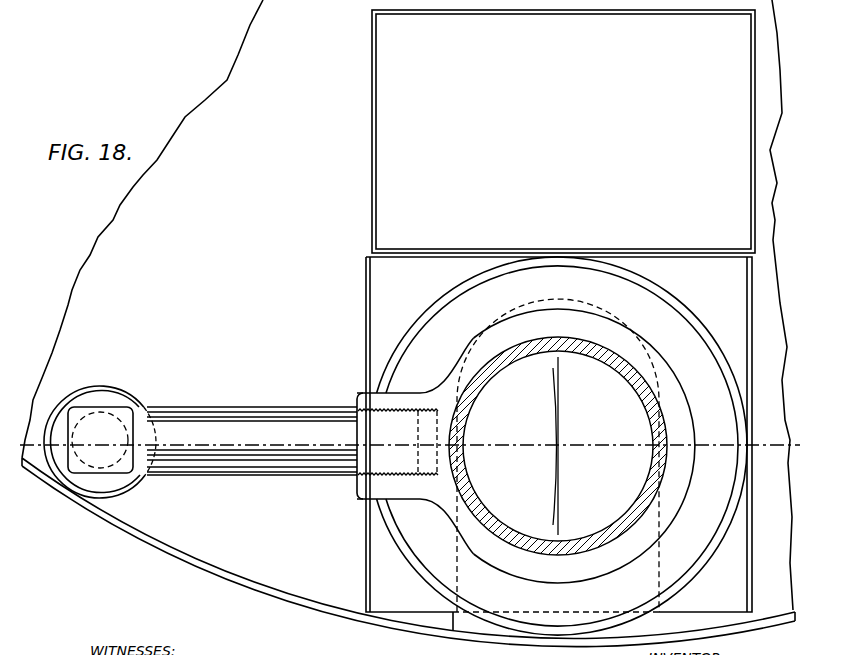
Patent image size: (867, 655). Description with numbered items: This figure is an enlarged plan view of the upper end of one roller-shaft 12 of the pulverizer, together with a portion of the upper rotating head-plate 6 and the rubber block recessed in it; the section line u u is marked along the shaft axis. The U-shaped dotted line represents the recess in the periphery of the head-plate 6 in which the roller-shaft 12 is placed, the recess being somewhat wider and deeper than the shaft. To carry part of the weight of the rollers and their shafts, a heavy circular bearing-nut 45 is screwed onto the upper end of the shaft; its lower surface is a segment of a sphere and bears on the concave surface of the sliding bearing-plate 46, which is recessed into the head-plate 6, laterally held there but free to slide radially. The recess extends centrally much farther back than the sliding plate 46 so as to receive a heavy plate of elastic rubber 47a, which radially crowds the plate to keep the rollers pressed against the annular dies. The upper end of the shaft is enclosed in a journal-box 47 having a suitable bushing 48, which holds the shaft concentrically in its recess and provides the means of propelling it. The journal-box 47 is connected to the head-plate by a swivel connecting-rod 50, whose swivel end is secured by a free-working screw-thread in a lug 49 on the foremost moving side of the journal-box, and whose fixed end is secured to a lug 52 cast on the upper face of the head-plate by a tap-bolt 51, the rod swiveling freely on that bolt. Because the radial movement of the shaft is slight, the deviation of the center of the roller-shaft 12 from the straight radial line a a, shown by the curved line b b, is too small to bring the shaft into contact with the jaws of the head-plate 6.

The upper rotating head-plate 6 is at (788, 300).
The roller-shaft 12 is at (410, 446).
The circular bearing-nut 45 is at (526, 455).
The sliding bearing-plate 46 is at (559, 446).
The journal-box 47 is at (518, 327).
The plate of elastic rubber 47a is at (574, 131).
The bushing 48 is at (578, 340).
The lug 49 is at (362, 395).
The swivel connecting-rod 50 is at (248, 407).
The tap-bolt 51 is at (100, 440).
The lug 52 is at (97, 386).
The straight radial line a is at (565, 446).
The curved line b is at (546, 448).
The section line u- u is at (409, 444).